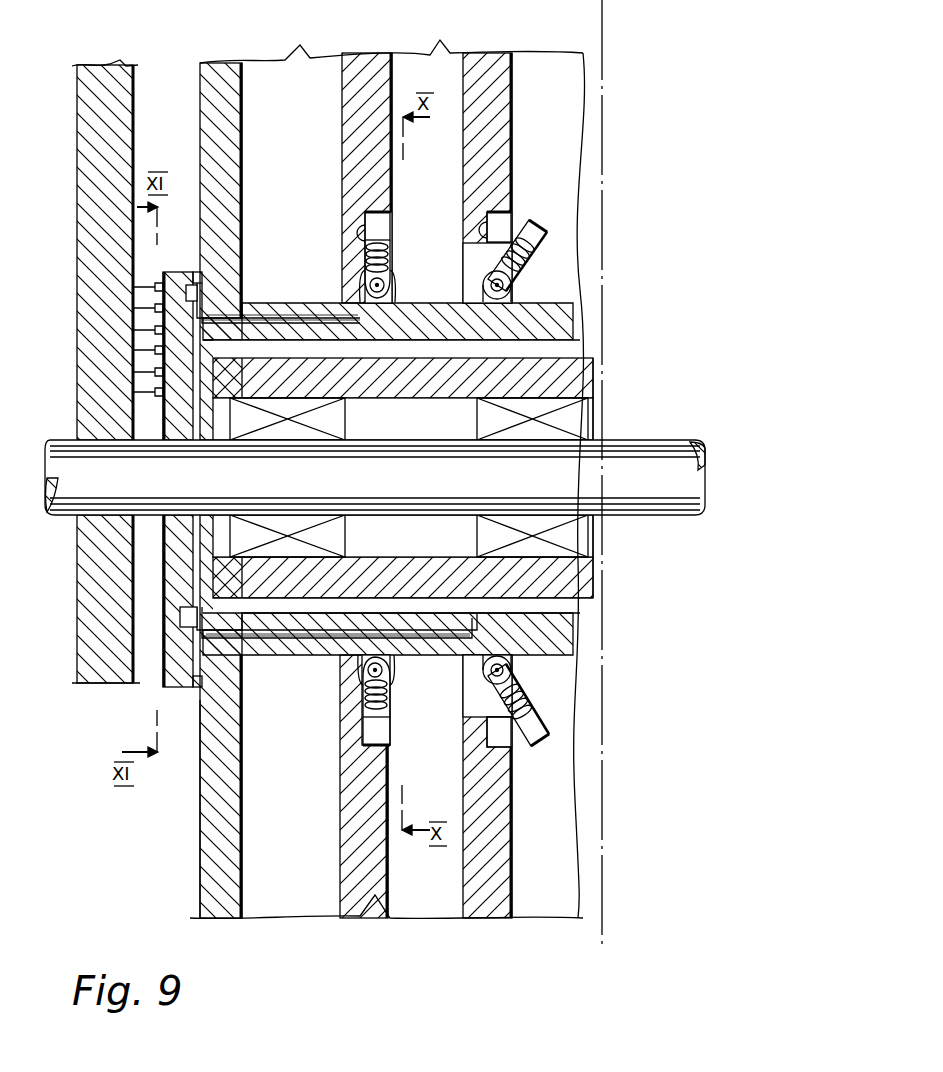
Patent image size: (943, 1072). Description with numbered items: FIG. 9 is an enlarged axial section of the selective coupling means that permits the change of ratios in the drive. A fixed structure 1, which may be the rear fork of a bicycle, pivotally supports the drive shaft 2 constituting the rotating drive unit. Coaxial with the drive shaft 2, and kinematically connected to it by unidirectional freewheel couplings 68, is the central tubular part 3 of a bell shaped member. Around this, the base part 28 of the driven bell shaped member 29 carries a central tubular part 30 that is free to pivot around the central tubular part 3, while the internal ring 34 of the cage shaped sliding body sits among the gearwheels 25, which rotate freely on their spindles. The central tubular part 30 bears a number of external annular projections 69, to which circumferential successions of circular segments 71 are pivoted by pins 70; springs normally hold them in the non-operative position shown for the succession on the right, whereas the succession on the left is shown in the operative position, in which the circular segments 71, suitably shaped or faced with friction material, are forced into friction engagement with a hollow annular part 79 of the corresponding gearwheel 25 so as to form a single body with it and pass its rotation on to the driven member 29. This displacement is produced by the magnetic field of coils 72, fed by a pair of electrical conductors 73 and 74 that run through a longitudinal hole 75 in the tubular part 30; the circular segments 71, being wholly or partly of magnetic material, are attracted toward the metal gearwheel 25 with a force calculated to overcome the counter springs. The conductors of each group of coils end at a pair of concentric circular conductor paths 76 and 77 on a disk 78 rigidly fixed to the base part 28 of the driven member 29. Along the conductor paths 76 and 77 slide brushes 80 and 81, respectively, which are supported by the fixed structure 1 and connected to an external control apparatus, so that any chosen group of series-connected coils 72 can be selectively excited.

The fixed structure 1 is at (88, 150).
The drive shaft 2 is at (655, 468).
The central tubular part 3 is at (425, 385).
The gearwheel 25 is at (360, 95).
The base part 28 is at (222, 783).
The bell shaped member 29 is at (196, 831).
The central tubular part 30 is at (565, 640).
The internal ring 34 is at (490, 738).
The unidirectional freewheel coupling 68 is at (575, 420).
The external annular projection 69 is at (398, 302).
The pin 70 is at (392, 283).
The circular segment 71 is at (390, 225).
The coil 72 is at (536, 235).
The electrical conductor 73 is at (274, 320).
The electrical conductor 74 is at (293, 318).
The longitudinal hole 75 is at (318, 318).
The circular conductor path 76 is at (178, 272).
The circular conductor path 77 is at (192, 285).
The disk 78 is at (152, 422).
The hollow annular part 79 is at (366, 225).
The brush 80 is at (150, 287).
The brush 81 is at (150, 308).